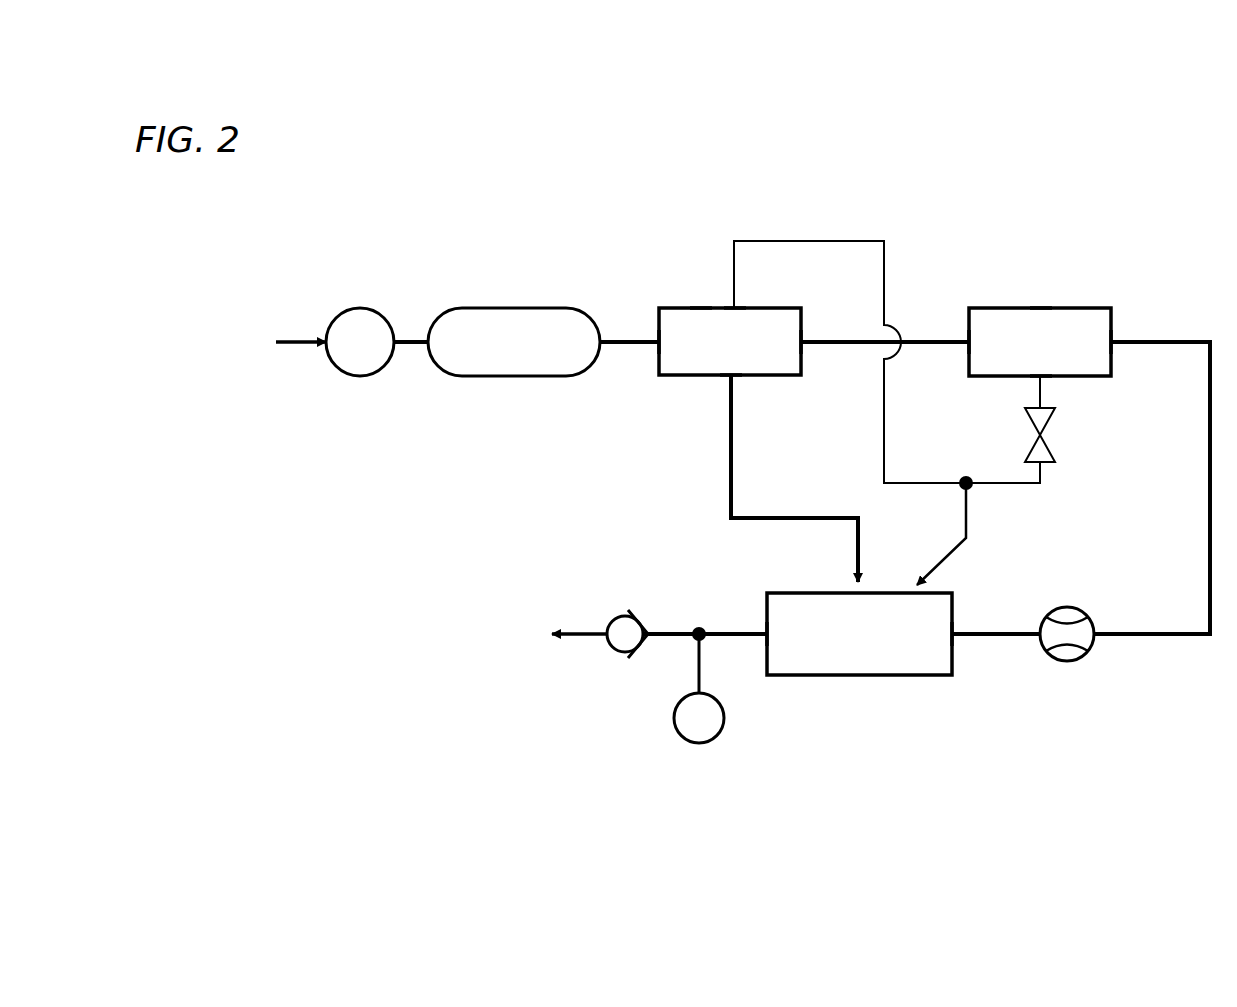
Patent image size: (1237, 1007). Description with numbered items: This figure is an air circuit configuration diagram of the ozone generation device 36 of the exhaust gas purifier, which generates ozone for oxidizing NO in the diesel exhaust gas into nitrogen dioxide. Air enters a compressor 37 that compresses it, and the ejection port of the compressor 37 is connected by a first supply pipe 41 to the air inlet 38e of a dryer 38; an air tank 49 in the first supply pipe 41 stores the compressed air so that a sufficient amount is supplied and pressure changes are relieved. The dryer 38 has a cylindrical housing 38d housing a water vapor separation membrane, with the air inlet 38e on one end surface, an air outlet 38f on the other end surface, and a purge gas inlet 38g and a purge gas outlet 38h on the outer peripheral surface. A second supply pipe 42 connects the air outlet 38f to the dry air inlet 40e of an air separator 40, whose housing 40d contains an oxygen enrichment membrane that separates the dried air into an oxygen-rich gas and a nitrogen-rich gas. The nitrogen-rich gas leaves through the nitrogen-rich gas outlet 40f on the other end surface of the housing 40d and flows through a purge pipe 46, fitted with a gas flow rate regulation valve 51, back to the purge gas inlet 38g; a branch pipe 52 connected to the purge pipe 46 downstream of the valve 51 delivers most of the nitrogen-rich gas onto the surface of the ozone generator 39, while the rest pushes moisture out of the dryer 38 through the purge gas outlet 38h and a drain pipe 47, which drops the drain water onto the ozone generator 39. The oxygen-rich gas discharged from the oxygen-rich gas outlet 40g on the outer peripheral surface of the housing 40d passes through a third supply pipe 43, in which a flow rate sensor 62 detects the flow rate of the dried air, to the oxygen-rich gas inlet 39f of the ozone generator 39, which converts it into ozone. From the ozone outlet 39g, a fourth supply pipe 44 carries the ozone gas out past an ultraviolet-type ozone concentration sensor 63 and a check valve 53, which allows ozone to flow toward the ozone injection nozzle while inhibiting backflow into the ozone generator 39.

The ozone generation device 36 is at (225, 240).
The compressor 37 is at (360, 377).
The first supply pipe 41 is at (408, 338).
The air tank 49 is at (529, 357).
The dryer 38 is at (744, 357).
The housing 38d is at (700, 306).
The air inlet 38e is at (657, 335).
The air outlet 38f is at (805, 351).
The purge gas inlet 38g is at (765, 306).
The purge gas outlet 38h is at (728, 380).
The purge pipe 46 is at (816, 242).
The second supply pipe 42 is at (925, 340).
The air separator 40 is at (1054, 357).
The housing 40d is at (1040, 306).
The dry air inlet 40e is at (968, 350).
The nitrogen-rich gas outlet 40f is at (1048, 378).
The oxygen-rich gas outlet 40g is at (1113, 338).
The gas flow rate regulation valve 51 is at (1052, 425).
The drain pipe 47 is at (727, 465).
The branch pipe 52 is at (950, 553).
The third supply pipe 43 is at (1135, 637).
The flow rate sensor 62 is at (1068, 662).
The ozone generator 39 is at (872, 649).
The ozone outlet 39g is at (765, 638).
The oxygen-rich gas inlet 39f is at (955, 640).
The fourth supply pipe 44 is at (665, 633).
The check valve 53 is at (618, 652).
The ozone concentration sensor 63 is at (692, 744).